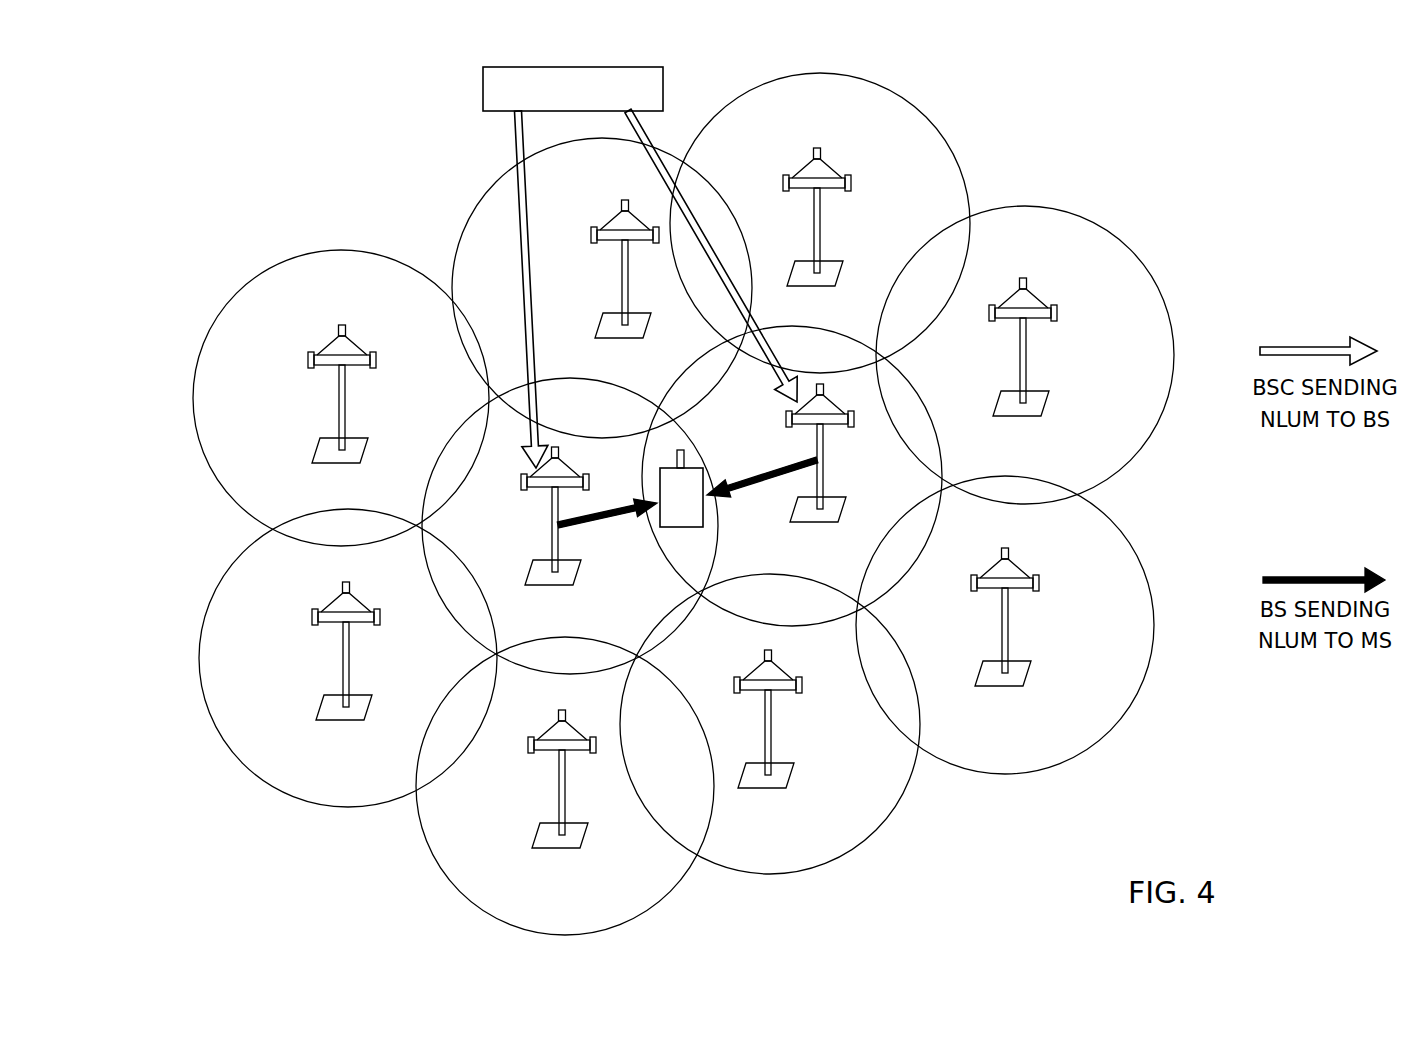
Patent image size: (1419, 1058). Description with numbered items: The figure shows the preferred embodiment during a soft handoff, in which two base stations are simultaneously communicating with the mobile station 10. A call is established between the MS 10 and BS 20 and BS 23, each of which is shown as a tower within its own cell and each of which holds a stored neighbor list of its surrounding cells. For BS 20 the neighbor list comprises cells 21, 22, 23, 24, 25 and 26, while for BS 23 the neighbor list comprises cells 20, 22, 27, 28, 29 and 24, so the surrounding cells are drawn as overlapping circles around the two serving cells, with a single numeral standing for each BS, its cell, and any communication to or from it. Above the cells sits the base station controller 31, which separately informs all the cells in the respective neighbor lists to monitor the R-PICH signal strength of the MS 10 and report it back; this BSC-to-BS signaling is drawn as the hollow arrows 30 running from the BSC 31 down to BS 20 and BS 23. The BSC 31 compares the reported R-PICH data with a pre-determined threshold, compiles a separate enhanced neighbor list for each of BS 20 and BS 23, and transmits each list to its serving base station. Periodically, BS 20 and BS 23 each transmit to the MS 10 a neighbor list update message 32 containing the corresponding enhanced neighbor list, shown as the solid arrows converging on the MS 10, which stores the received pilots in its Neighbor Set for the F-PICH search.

The mobile station 10 is at (683, 528).
The base station 20 is at (490, 542).
The neighboring cell 21 is at (243, 400).
The neighboring cell 22 is at (557, 311).
The base station 23 is at (860, 490).
The neighboring cell 24 is at (825, 773).
The neighboring cell 25 is at (470, 821).
The neighboring cell 26 is at (243, 672).
The neighboring cell 27 is at (883, 202).
The neighboring cell 28 is at (1112, 378).
The neighboring cell 29 is at (1073, 673).
The BSC sending NLUM to base station 30 is at (513, 136).
The base station controller 31 is at (611, 67).
The neighbor list update message 32 is at (604, 520).